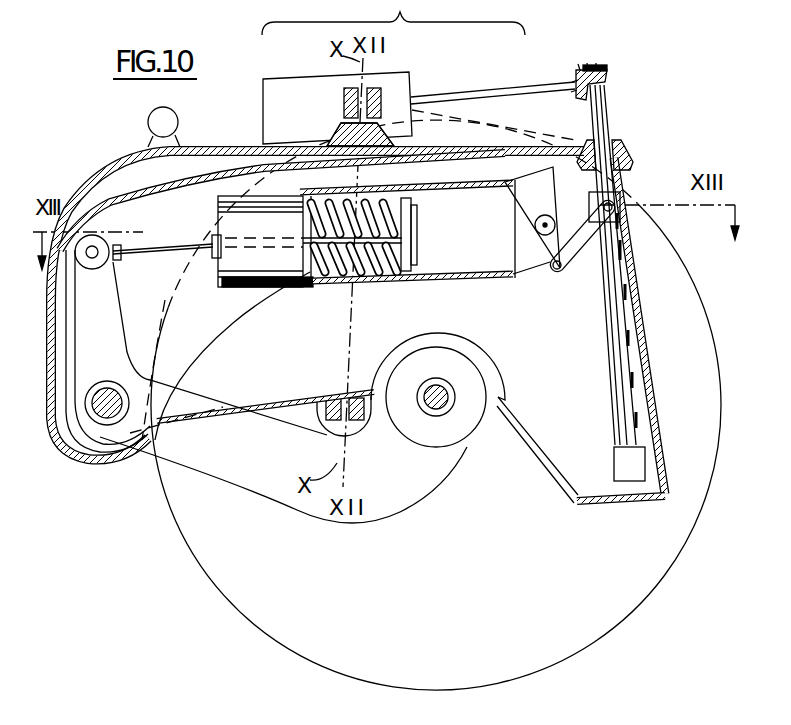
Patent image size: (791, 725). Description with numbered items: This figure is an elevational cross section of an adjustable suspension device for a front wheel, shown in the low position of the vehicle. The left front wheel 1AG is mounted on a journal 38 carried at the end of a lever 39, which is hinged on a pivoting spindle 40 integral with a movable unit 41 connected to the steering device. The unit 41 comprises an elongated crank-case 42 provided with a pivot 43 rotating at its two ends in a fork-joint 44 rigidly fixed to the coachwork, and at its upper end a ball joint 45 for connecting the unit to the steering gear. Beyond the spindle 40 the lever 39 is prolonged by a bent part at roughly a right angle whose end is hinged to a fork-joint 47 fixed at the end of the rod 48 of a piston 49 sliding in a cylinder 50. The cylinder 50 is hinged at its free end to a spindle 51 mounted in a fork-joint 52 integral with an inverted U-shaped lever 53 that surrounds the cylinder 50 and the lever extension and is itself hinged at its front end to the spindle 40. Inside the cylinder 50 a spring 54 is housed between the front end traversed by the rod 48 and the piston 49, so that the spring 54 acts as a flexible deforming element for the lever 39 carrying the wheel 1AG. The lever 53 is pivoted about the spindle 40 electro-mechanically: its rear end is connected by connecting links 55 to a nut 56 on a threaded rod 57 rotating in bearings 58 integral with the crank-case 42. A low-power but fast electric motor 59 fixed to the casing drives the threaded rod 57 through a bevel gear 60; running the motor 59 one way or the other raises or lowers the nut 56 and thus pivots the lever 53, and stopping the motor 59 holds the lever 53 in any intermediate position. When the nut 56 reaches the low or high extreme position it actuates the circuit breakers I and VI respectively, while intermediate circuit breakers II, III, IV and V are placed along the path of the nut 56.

The left front wheel 1AG is at (721, 506).
The journal 38 is at (430, 411).
The lever 39 is at (213, 420).
The pivoting spindle 40 is at (100, 412).
The unit 41 is at (393, 33).
The crank-case 42 is at (112, 163).
The pivot 43 is at (331, 427).
The fork-joint 44 is at (346, 97).
The ball joint 45 is at (197, 108).
The fork-joint 47 is at (97, 222).
The rod 48 is at (157, 246).
The piston 49 is at (405, 218).
The cylinder 50 is at (500, 279).
The spindle 51 is at (536, 226).
The fork-joint 52 is at (578, 198).
The inverted U-shaped lever 53 is at (490, 144).
The spring 54 is at (382, 190).
The connecting links 55 is at (566, 272).
The nut 56 is at (622, 205).
The threaded rod 57 is at (628, 337).
The bearings 58 is at (641, 467).
The electric motor 59 is at (385, 68).
The bevel gear 60 is at (585, 63).
The circuit breaker I is at (645, 213).
The intermediate circuit breaker II is at (654, 257).
The intermediate circuit breaker III is at (622, 296).
The intermediate circuit breaker IV is at (626, 340).
The intermediate circuit breaker V is at (634, 378).
The circuit breaker VI is at (638, 423).